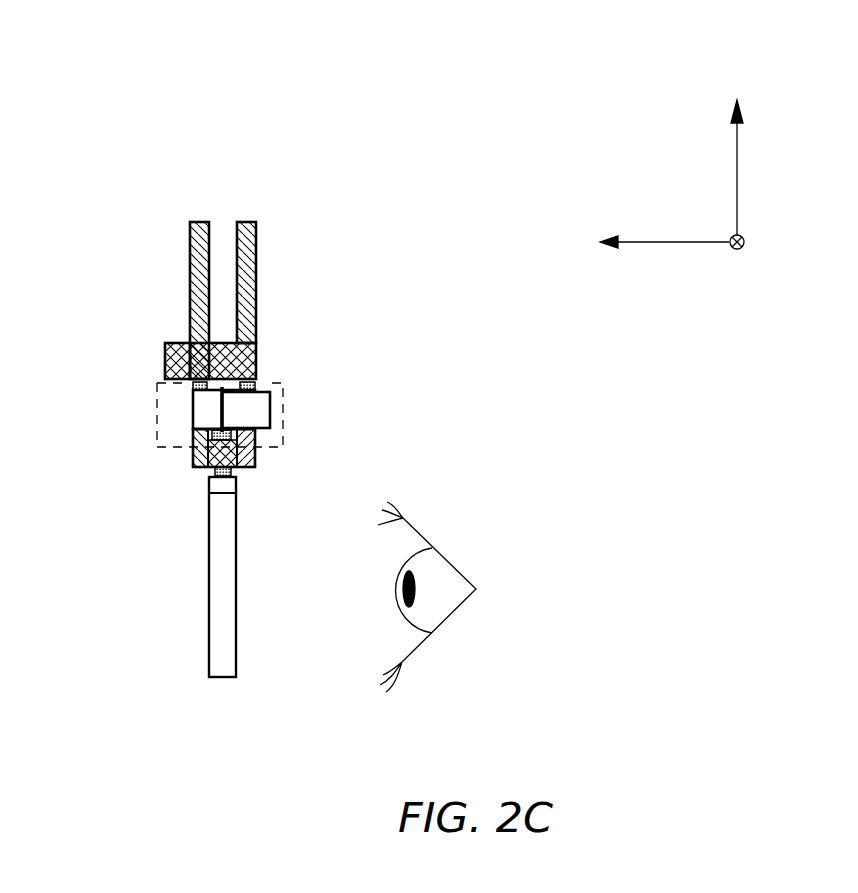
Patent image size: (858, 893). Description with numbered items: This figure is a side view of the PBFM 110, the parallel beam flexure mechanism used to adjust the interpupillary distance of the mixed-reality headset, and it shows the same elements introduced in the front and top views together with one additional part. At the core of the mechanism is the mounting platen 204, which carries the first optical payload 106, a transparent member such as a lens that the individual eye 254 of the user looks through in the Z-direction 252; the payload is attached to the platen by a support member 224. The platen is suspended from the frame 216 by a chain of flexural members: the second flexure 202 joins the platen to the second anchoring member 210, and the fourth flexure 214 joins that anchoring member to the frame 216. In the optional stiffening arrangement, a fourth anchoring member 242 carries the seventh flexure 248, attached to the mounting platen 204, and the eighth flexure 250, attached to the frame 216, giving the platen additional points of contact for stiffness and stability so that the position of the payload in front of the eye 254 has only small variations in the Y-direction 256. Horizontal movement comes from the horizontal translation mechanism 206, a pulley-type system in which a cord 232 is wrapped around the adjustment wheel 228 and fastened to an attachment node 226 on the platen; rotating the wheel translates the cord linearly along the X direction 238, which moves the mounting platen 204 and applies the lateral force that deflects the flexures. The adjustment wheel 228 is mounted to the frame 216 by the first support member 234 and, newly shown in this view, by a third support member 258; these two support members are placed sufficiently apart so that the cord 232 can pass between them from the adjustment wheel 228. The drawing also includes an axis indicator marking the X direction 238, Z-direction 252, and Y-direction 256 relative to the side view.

The PBFM 110 is at (407, 87).
The first optical payload 106 is at (212, 660).
The second flexure 202 is at (219, 482).
The mounting platen 204 is at (210, 467).
The horizontal translation mechanism 206 is at (285, 388).
The second anchoring member 210 is at (182, 265).
The fourth flexure 214 is at (190, 283).
The frame 216 is at (167, 358).
The support member 224 is at (233, 472).
The attachment node 226 is at (256, 445).
The adjustment wheel 228 is at (253, 420).
The cord 232 is at (222, 415).
The first support member 234 is at (192, 388).
The X direction 238 is at (745, 245).
The fourth anchoring member 242 is at (276, 251).
The seventh flexure 248 is at (240, 468).
The eighth flexure 250 is at (255, 283).
The Z-direction 252 is at (688, 243).
The eye 254 is at (448, 618).
The Y-direction 256 is at (737, 140).
The third support member 258 is at (258, 385).